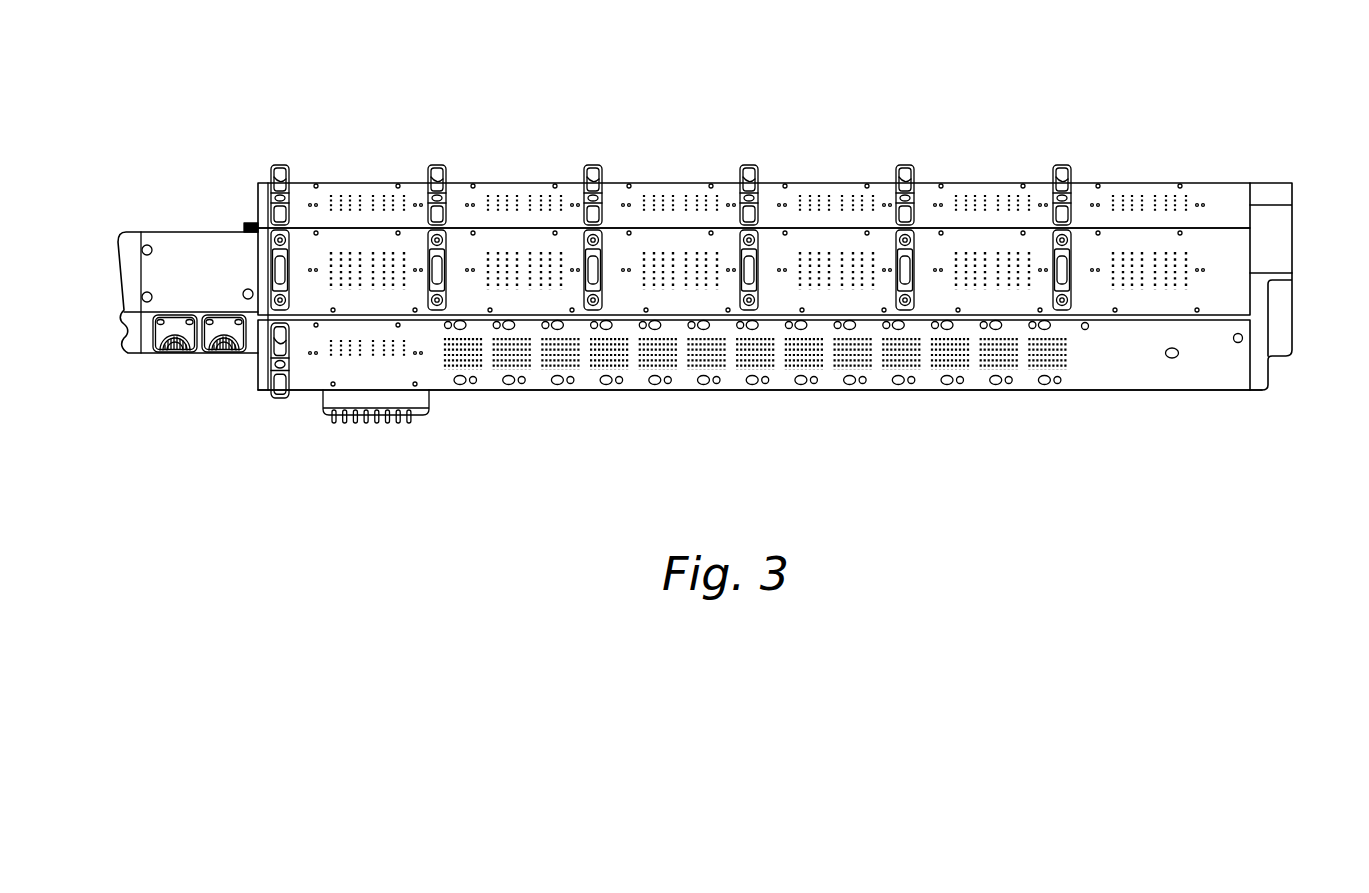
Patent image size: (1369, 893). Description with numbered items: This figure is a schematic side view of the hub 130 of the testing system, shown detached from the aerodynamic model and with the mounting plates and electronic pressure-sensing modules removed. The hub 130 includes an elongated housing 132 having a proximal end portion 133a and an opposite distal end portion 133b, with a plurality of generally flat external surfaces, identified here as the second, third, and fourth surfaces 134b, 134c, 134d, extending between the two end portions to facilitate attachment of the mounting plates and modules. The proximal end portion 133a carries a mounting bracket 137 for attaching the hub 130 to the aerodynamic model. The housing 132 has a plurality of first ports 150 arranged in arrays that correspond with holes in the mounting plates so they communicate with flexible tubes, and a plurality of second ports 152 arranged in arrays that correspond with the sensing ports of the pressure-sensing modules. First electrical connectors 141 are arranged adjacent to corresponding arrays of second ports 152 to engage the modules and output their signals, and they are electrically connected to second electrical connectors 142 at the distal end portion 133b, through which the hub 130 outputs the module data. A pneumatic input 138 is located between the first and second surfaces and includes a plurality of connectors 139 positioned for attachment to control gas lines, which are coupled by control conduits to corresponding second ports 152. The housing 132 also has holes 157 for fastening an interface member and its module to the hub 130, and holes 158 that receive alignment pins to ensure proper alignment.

The hub 130 is at (1085, 72).
The elongated housing 132 is at (975, 392).
The proximal end portion 133a is at (1278, 253).
The distal end portion 133b is at (187, 285).
The second surface 134b is at (1118, 370).
The third surface 134c is at (1232, 258).
The fourth surface 134d is at (1210, 203).
The mounting bracket 137 is at (1292, 197).
The pneumatic input 138 is at (353, 400).
The connectors 139 is at (397, 422).
The first electrical connectors 141 is at (277, 262).
The second electrical connectors 142 is at (225, 355).
The first ports 150 is at (835, 340).
The second ports 152 is at (405, 252).
The holes 157 is at (572, 310).
The holes 158 is at (522, 260).